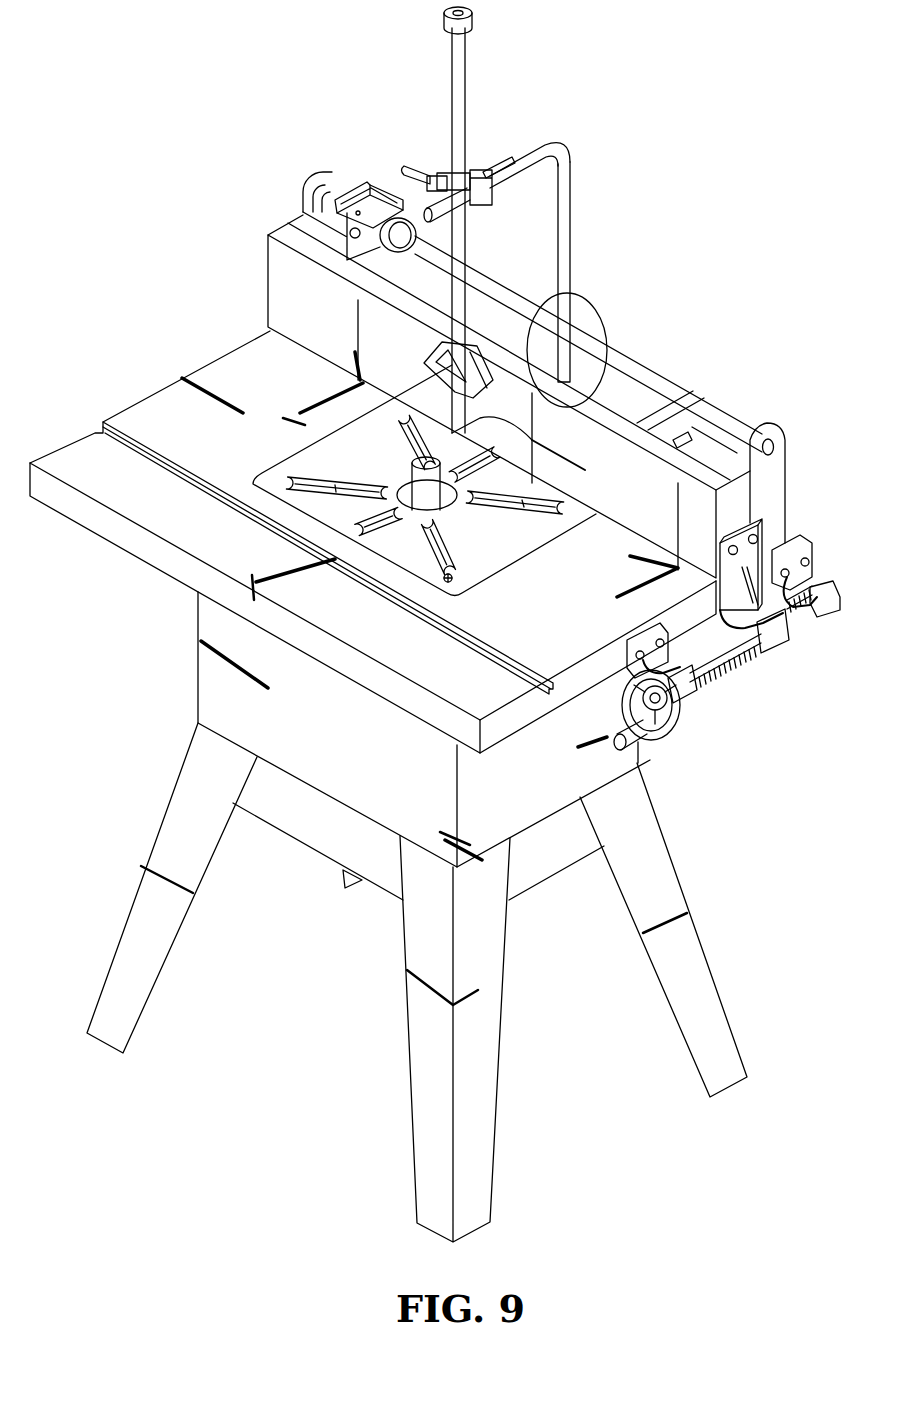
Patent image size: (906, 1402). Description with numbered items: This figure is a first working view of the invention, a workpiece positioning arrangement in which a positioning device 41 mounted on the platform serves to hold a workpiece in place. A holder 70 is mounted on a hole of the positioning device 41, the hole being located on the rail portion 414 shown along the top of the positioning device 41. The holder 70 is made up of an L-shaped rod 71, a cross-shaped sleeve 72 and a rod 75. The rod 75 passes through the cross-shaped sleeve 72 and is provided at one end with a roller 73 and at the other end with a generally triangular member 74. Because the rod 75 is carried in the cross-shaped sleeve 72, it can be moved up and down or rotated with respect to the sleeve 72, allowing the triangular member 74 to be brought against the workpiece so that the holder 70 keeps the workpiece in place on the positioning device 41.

The positioning device 41 is at (648, 512).
The guide rail 414 is at (590, 352).
The holder 70 is at (550, 130).
The L-shaped rod 71 is at (567, 240).
The cross-shaped sleeve 72 is at (468, 165).
The roller 73 is at (445, 18).
The triangular member 74 is at (432, 365).
The rod 75 is at (466, 238).